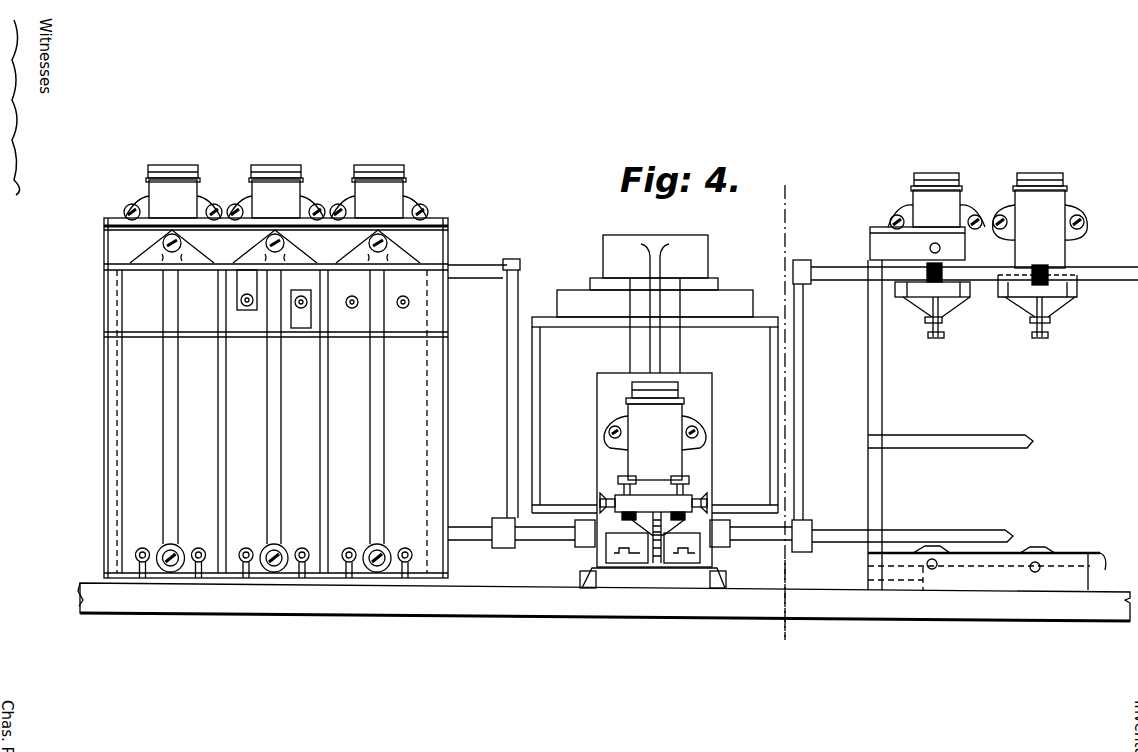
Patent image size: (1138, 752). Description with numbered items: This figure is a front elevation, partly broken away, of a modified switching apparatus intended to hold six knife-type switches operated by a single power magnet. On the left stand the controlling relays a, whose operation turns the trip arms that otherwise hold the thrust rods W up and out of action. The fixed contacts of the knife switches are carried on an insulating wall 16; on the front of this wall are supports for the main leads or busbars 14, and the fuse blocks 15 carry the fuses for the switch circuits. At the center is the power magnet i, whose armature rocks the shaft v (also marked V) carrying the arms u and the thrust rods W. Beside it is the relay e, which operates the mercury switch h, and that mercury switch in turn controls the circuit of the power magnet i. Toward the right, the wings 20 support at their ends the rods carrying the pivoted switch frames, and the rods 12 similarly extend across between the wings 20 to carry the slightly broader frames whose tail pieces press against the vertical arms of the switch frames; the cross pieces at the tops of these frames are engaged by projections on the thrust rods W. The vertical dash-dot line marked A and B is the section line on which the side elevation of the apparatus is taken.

The controlling relay a is at (168, 193).
The main leads or busbars 14 is at (245, 272).
The insulating wall 16 is at (115, 238).
The fuse blocks 15 is at (167, 495).
The power magnet i is at (655, 411).
The relay e is at (643, 428).
The mercury switch h is at (620, 495).
The arms u is at (512, 468).
The shaft v is at (458, 533).
The shaft V is at (957, 535).
The section line A—B A is at (794, 400).
The section line A— B is at (785, 609).
The wings 20 is at (882, 402).
The rods 12 is at (957, 437).
The thrust rods W is at (1027, 283).